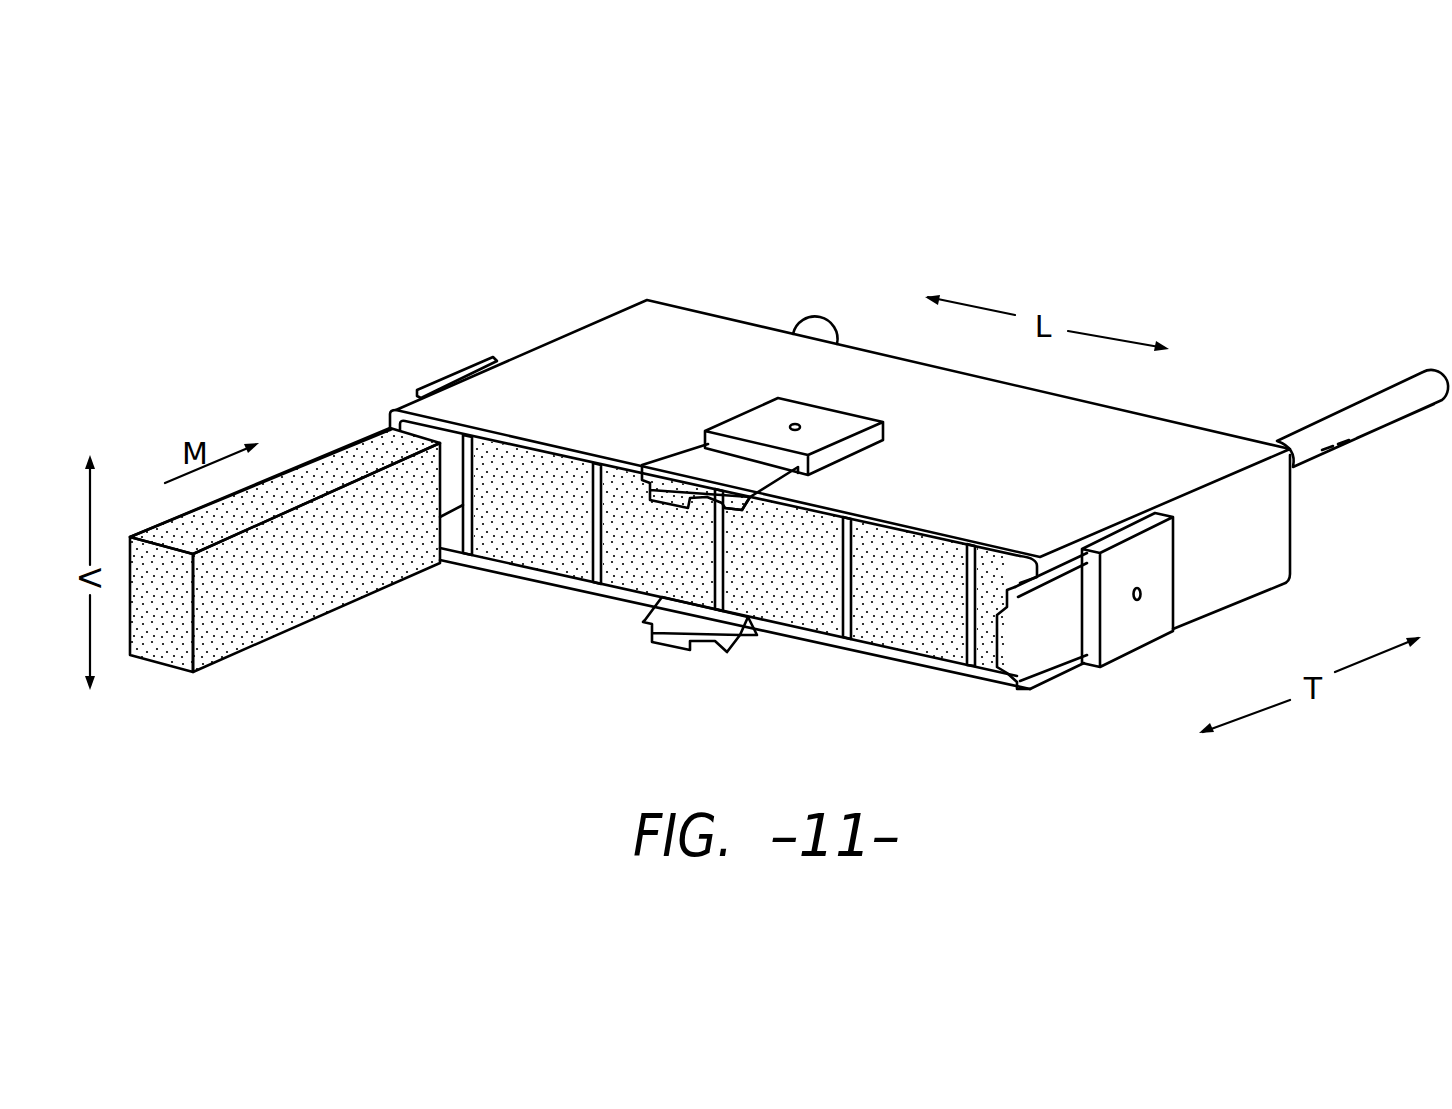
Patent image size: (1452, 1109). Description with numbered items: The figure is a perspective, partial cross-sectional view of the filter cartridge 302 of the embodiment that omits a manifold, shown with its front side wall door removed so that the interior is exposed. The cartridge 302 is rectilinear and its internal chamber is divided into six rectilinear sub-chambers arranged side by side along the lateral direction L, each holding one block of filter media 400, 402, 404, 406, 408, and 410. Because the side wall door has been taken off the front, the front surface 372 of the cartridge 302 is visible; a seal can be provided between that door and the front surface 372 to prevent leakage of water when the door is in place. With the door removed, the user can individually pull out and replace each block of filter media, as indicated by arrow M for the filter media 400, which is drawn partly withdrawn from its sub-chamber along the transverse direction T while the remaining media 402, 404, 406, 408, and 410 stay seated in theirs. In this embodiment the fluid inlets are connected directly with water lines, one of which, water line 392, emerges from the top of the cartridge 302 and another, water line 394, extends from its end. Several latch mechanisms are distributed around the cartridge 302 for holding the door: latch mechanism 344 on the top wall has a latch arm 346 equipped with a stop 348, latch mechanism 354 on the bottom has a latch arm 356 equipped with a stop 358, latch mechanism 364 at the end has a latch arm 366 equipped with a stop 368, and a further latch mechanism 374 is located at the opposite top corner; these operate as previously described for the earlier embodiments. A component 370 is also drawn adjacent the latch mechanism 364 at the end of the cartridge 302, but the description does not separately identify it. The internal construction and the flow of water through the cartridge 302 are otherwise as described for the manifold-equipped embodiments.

The filter cartridge 302 is at (918, 470).
The water line 392 is at (812, 334).
The latch mechanism 374 is at (430, 360).
The front surface 372 is at (545, 462).
The latch mechanism 344 is at (748, 511).
The latch arm 346 is at (693, 470).
The stop 348 is at (777, 517).
The stop 358 is at (821, 421).
The latch mechanism 354 is at (658, 659).
The latch arm 356 is at (757, 640).
The latch mechanism 364 is at (1134, 618).
The latch arm 366 is at (1043, 660).
The stop 368 is at (1012, 580).
The mounting plate 370 is at (1128, 633).
The water line 394 is at (1375, 410).
The filter media 400 is at (292, 595).
The filter media 402 is at (523, 540).
The filter media 404 is at (630, 540).
The filter media 406 is at (812, 610).
The filter media 408 is at (907, 622).
The filter media 410 is at (988, 642).